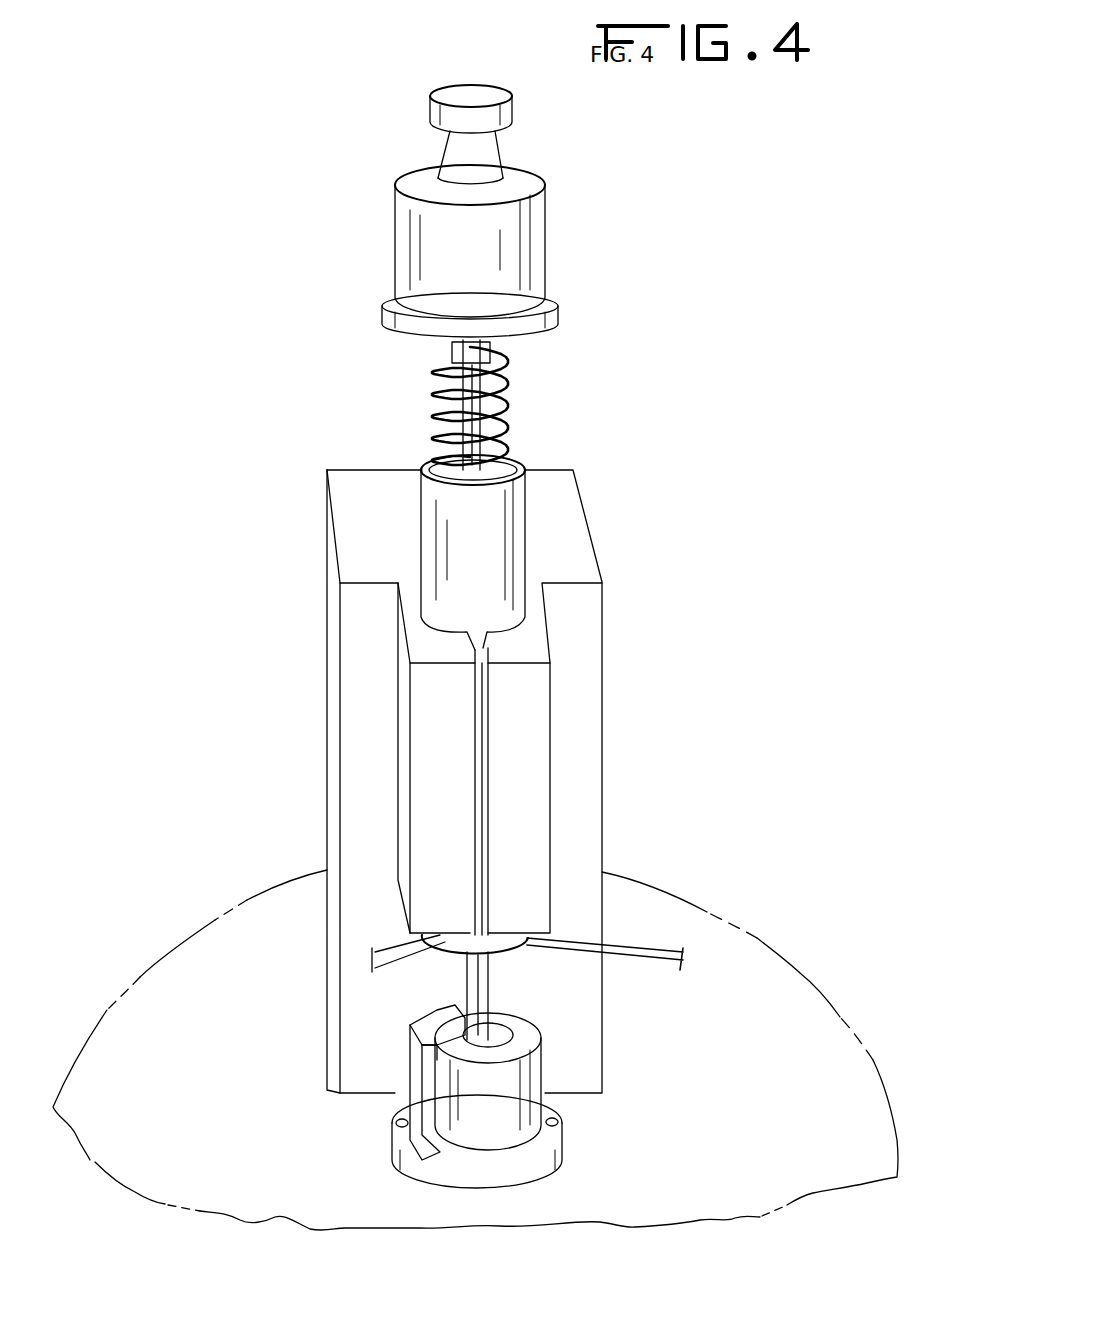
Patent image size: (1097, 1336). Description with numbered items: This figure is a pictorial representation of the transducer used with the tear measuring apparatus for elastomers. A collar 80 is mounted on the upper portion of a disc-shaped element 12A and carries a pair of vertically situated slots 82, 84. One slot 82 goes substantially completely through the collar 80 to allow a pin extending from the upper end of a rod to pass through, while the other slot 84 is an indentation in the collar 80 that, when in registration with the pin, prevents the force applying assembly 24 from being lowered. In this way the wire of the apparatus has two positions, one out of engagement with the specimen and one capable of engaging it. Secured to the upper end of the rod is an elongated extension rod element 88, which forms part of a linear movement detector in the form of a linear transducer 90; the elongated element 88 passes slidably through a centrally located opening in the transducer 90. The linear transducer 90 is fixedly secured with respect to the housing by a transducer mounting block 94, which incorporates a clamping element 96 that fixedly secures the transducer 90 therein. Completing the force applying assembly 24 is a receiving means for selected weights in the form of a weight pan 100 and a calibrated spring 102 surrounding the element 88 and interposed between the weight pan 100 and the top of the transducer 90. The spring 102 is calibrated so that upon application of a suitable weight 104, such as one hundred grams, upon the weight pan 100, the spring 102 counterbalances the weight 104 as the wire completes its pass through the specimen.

The disc-shaped element 12A is at (802, 971).
The force applying assembly 24 is at (610, 806).
The collar 80 is at (566, 1160).
The slot 82 is at (427, 1103).
The slot 84 is at (448, 1017).
The elongated extension rod element 88 is at (498, 436).
The linear transducer 90 is at (542, 545).
The transducer mounting block 94 is at (567, 634).
The clamping element 96 is at (535, 908).
The weight pan 100 is at (560, 306).
The calibrated spring 102 is at (505, 352).
The weight 104 is at (548, 207).